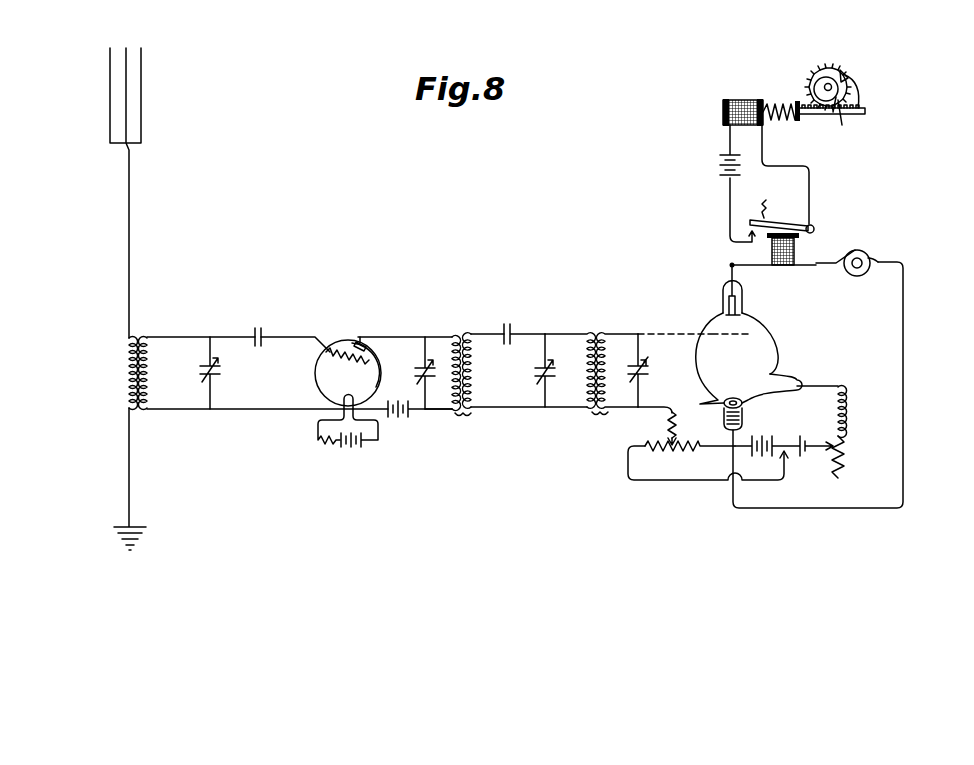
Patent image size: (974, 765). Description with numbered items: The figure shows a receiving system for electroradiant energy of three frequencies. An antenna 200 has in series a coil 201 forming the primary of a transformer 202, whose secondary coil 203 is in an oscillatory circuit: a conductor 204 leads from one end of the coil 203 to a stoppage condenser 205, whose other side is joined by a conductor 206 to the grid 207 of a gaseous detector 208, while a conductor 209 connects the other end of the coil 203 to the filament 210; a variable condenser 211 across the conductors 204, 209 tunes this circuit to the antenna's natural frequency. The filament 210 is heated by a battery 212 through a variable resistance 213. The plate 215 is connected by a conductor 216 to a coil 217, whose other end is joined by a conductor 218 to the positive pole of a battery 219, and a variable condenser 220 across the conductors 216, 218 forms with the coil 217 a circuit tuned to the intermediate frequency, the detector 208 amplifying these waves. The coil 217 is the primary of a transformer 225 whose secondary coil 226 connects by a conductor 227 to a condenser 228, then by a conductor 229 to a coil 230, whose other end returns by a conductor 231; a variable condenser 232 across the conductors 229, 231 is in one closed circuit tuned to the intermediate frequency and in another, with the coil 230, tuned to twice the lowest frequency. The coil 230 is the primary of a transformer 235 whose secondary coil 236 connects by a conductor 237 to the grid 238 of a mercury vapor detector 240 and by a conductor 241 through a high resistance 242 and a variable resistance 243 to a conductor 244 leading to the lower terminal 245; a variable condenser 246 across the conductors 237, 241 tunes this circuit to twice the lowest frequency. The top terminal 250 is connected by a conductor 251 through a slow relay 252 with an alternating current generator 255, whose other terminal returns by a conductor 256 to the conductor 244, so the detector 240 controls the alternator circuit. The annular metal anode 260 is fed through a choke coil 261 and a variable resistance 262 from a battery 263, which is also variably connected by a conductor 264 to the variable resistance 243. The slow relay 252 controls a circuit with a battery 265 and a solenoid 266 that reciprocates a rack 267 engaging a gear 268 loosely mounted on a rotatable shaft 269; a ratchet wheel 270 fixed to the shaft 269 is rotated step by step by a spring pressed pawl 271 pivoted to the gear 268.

The antenna 200 is at (126, 188).
The coil 201 is at (124, 372).
The transformer 202 is at (158, 414).
The secondary coil 203 is at (154, 378).
The conductor 204 is at (226, 333).
The stoppage condenser 205 is at (262, 330).
The conductor 206 is at (288, 337).
The grid 207 is at (327, 356).
The gaseous detector 208 is at (324, 382).
The conductor 209 is at (236, 411).
The filament 210 is at (338, 401).
The variable condenser 211 is at (230, 373).
The battery 212 is at (350, 450).
The variable resistance 213 is at (318, 448).
The plate 215 is at (360, 343).
The conductor 216 is at (408, 332).
The coil 217 is at (442, 334).
The conductor 218 is at (447, 412).
The battery 219 is at (399, 418).
The variable condenser 220 is at (412, 373).
The transformer 225 is at (466, 426).
The secondary coil 226 is at (476, 372).
The conductor 227 is at (484, 330).
The condenser 228 is at (522, 328).
The conductor 229 is at (570, 352).
The coil 230 is at (582, 380).
The conductor 231 is at (520, 409).
The variable condenser 232 is at (534, 370).
The transformer 235 is at (598, 426).
The secondary coil 236 is at (630, 370).
The conductor 237 is at (626, 328).
The grid 238 is at (745, 330).
The mercury vapor detector 240 is at (752, 355).
The conductor 241 is at (652, 418).
The high resistance 242 is at (677, 424).
The variable resistance 243 is at (690, 457).
The conductor 244 is at (700, 438).
The lower terminal 245 is at (745, 403).
The variable condenser 246 is at (644, 362).
The top terminal 250 is at (742, 300).
The conductor 251 is at (742, 265).
The slow relay 252 is at (798, 256).
The alternating current generator 255 is at (860, 252).
The conductor 256 is at (904, 358).
The annular metal anode 260 is at (779, 376).
The choke coil 261 is at (845, 401).
The variable resistance 262 is at (846, 458).
The battery 263 is at (782, 444).
The conductor 264 is at (770, 481).
The battery 265 is at (722, 172).
The solenoid 266 is at (750, 100).
The rack 267 is at (805, 118).
The gear 268 is at (852, 110).
The rotatable shaft 269 is at (835, 125).
The ratchet wheel 270 is at (848, 108).
The spring pressed pawl 271 is at (850, 92).